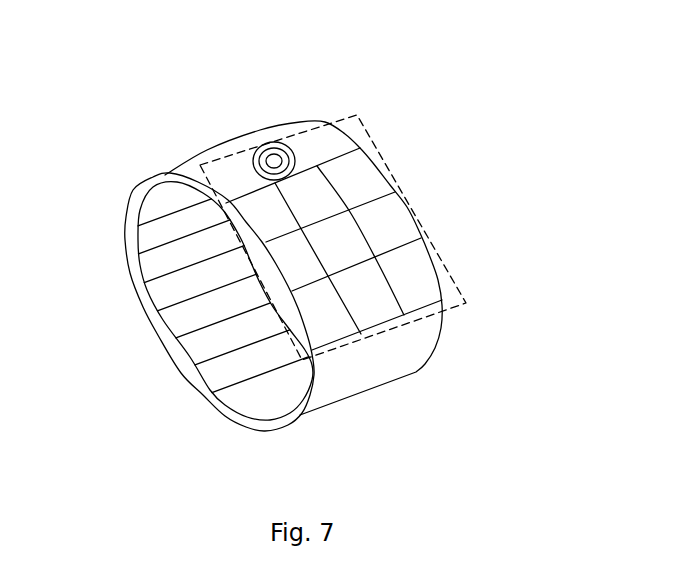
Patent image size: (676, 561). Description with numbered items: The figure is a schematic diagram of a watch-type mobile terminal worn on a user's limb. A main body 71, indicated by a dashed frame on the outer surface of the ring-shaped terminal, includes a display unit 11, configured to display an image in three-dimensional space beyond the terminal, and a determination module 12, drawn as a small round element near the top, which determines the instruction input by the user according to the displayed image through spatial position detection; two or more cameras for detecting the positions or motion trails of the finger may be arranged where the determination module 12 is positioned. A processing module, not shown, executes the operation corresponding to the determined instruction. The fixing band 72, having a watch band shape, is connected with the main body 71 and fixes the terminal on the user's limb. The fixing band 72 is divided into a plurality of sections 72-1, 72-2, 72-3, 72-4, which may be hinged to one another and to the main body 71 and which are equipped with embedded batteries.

The display unit 11 is at (366, 184).
The determination module 12 is at (280, 140).
The main body 71 is at (450, 272).
The fixing band 72 is at (433, 322).
The section 72-1 is at (148, 241).
The section 72-2 is at (150, 272).
The section 72-3 is at (160, 302).
The section 72-4 is at (177, 333).